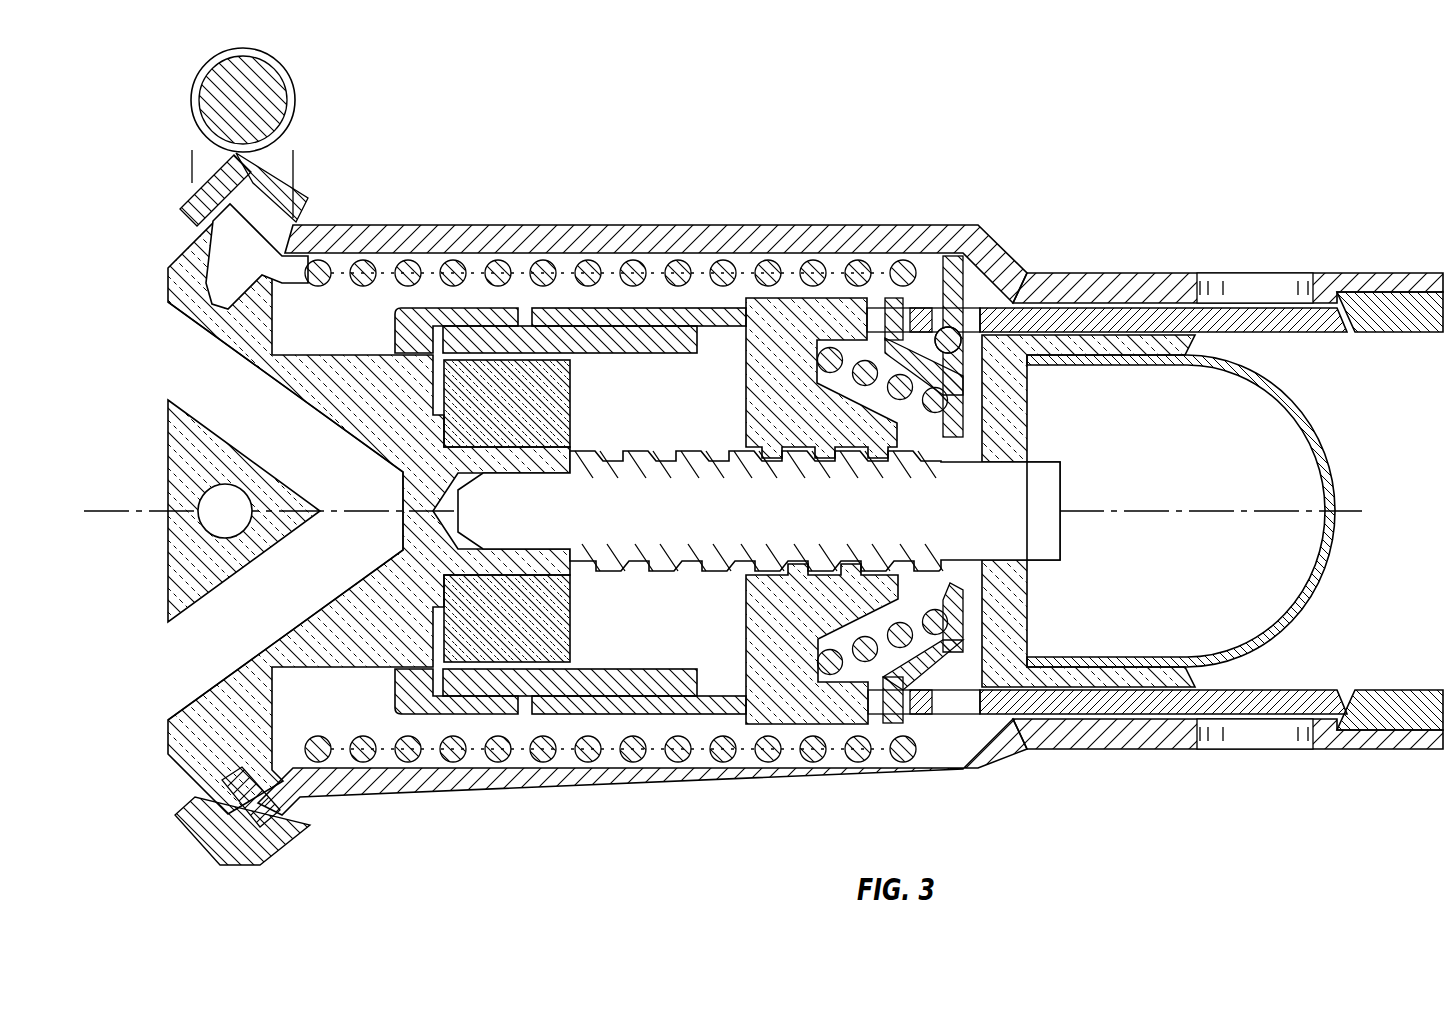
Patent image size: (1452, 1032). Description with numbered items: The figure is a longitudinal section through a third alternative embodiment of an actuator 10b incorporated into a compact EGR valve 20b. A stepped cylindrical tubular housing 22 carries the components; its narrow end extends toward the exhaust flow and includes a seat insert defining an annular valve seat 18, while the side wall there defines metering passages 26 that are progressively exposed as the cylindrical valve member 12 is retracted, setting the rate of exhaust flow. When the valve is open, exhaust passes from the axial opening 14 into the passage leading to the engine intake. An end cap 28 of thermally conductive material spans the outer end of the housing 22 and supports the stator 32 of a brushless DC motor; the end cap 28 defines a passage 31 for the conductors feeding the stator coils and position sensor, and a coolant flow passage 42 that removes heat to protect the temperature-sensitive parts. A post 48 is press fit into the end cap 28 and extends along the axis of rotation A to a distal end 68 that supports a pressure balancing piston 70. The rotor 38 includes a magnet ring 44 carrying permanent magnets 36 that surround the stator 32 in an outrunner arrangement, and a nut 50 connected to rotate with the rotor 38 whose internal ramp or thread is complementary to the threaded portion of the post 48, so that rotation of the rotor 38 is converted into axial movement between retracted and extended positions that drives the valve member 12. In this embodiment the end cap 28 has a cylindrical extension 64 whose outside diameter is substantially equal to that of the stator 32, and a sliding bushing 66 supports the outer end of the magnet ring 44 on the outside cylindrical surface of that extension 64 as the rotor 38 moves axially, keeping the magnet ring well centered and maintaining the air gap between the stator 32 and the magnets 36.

The actuator 10b is at (597, 203).
The housing 22 is at (892, 205).
The compact EGR valve 20b is at (1110, 248).
The annular valve seat 18 is at (1382, 306).
The metering passages 26 is at (1197, 264).
The cylindrical extension 64 is at (360, 358).
The sliding bushing 66 is at (420, 323).
The rotor 38 is at (759, 300).
The coolant flow passage 42 is at (197, 368).
The passage 31 is at (206, 493).
The axis of rotation A is at (143, 514).
The end cap 28 is at (160, 740).
The stator 32 is at (530, 618).
The magnets 36 is at (578, 690).
The magnet ring 44 is at (605, 700).
The nut 50 is at (803, 700).
The post 48 is at (698, 507).
The valve member 12 is at (1057, 700).
The pressure balancing piston 70 is at (1123, 672).
The axial opening 14 is at (1395, 337).
The distal end 68 is at (1048, 462).